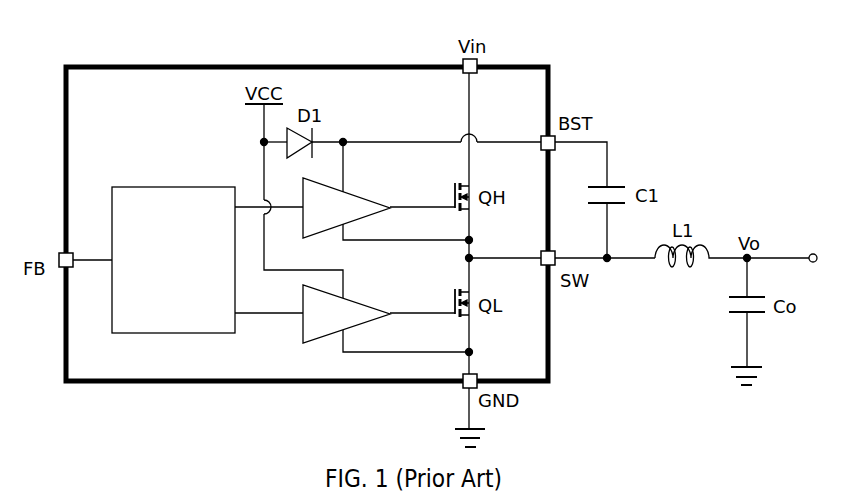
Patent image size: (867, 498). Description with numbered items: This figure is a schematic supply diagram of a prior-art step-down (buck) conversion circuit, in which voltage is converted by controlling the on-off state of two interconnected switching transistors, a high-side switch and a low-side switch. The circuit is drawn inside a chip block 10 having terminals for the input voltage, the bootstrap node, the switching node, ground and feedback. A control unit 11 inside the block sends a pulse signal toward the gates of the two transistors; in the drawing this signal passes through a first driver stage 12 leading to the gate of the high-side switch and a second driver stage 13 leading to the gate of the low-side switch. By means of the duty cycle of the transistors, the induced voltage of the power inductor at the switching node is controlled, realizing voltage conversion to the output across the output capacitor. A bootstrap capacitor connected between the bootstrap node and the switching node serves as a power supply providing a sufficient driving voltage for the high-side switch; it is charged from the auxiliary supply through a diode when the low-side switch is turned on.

The buck converter IC / power stage 10 is at (170, 64).
The control unit 11 is at (183, 283).
The high-side driver buffer 12 is at (357, 203).
The low-side driver buffer 13 is at (360, 308).